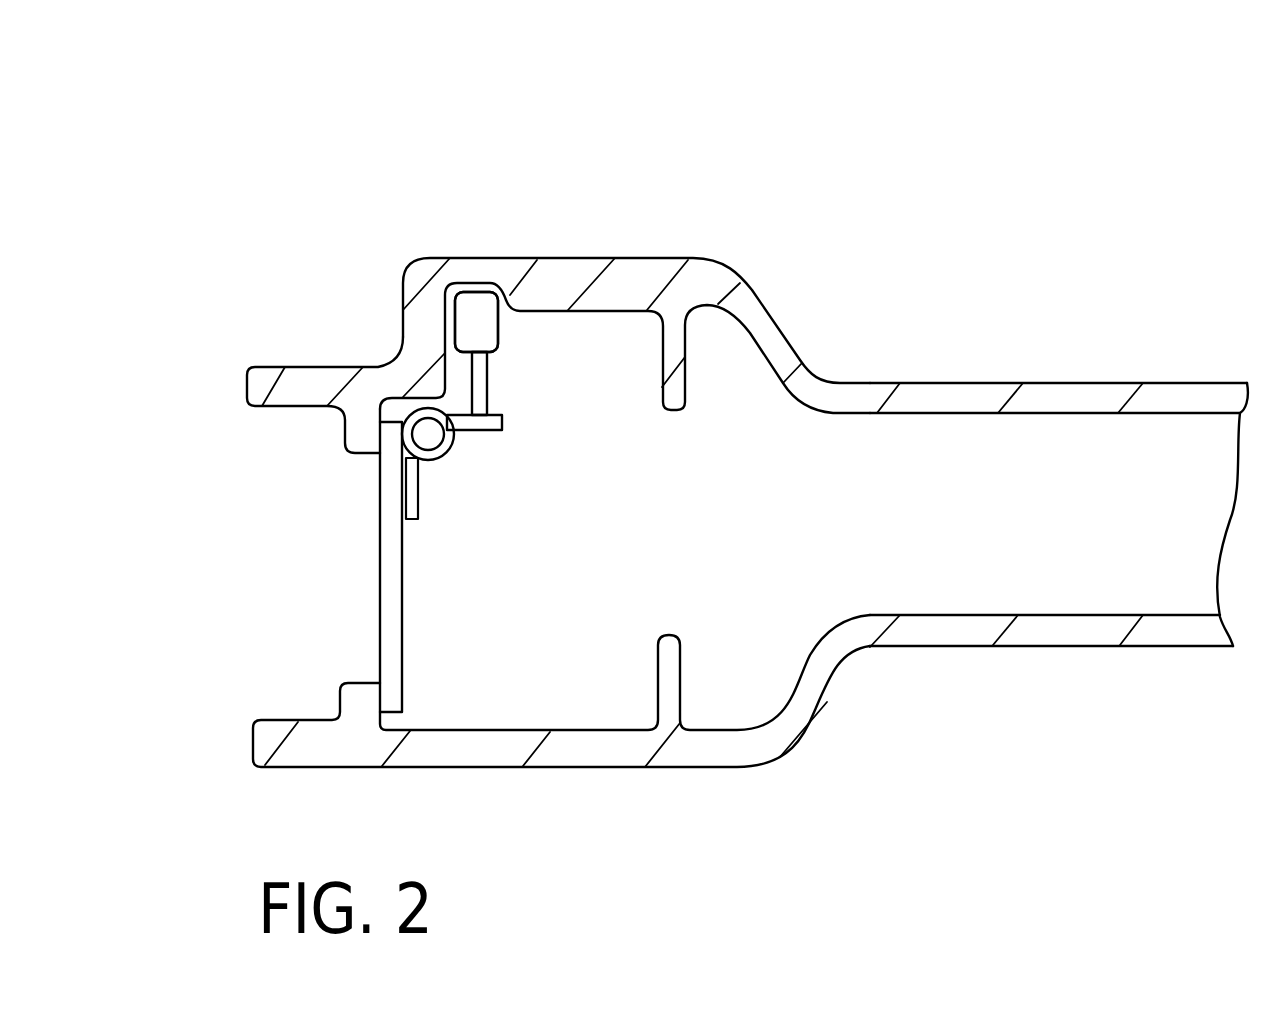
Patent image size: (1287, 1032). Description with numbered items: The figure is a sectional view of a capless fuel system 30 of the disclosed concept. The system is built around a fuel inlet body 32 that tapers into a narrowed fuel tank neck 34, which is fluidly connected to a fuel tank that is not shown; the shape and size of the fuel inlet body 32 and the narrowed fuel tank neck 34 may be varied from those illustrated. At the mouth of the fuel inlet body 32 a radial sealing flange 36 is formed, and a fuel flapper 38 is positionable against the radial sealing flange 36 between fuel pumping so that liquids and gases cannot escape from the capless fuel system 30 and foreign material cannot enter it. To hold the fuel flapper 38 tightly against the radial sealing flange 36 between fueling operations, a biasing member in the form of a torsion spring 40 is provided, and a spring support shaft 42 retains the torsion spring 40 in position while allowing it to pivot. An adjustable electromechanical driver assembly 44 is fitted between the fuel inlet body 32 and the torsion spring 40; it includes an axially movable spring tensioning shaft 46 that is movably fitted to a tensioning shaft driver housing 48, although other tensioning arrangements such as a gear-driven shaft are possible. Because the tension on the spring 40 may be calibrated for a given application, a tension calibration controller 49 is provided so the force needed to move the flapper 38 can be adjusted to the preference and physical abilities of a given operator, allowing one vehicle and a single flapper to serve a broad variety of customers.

The capless fuel system 30 is at (947, 186).
The fuel inlet body 32 is at (588, 288).
The narrowed fuel tank neck 34 is at (1075, 633).
The radial sealing flange 36 is at (362, 443).
The fuel flapper 38 is at (392, 658).
The torsion spring 40 is at (410, 508).
The spring support shaft 42 is at (415, 434).
The adjustable electromechanical driver assembly 44 is at (445, 223).
The axially movable spring tensioning shaft 46 is at (480, 388).
The tensioning shaft driver housing 48 is at (484, 300).
The tension calibration controller 49 is at (466, 298).